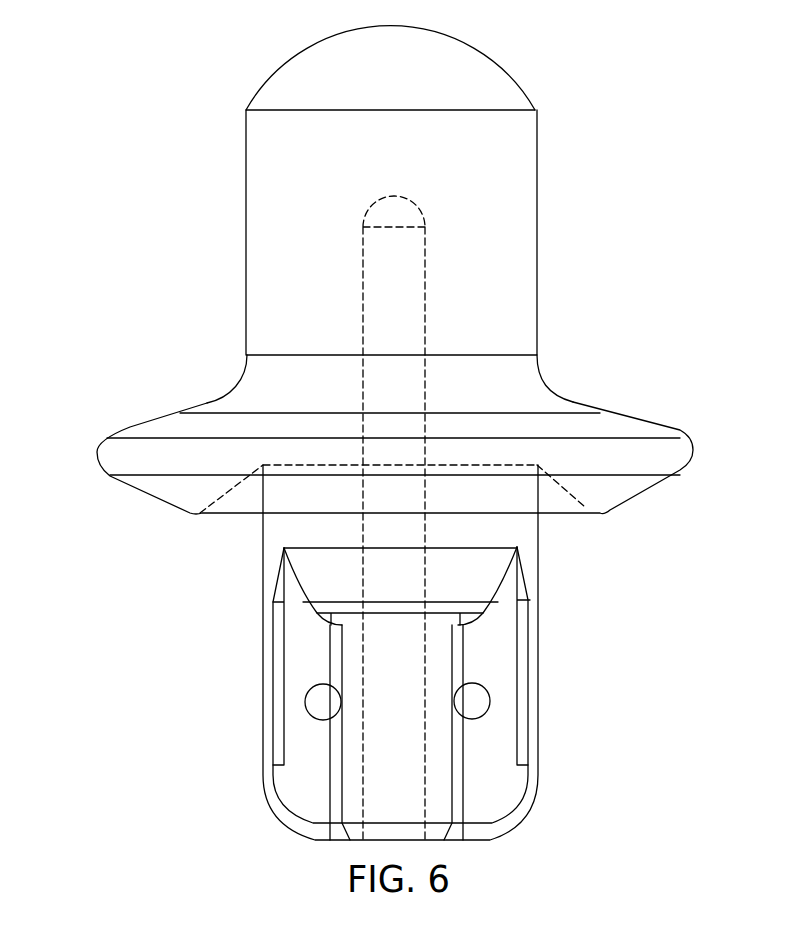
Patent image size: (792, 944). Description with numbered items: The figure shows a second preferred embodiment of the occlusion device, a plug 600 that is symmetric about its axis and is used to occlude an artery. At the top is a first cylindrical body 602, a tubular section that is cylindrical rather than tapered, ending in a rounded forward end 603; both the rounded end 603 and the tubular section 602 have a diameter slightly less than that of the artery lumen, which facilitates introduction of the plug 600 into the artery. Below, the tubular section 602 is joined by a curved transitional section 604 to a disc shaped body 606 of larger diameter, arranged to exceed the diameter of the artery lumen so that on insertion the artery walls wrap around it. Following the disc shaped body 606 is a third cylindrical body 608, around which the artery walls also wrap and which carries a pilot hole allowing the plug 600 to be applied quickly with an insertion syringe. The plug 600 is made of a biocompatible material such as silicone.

The plug 600 is at (572, 270).
The first cylindrical body 602 is at (246, 193).
The rounded forward end 603 is at (490, 62).
The curved transitional section 604 is at (538, 387).
The disc shaped body 606 is at (633, 413).
The third cylindrical body 608 is at (538, 635).